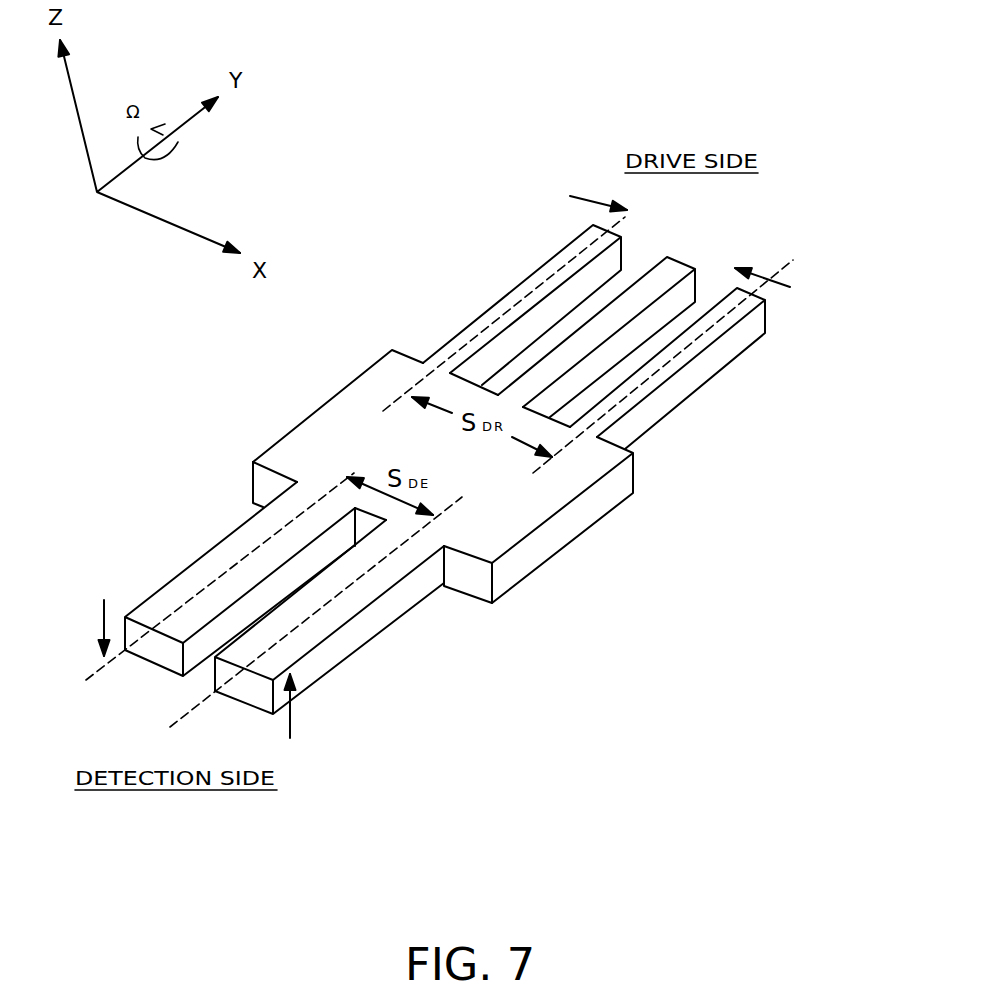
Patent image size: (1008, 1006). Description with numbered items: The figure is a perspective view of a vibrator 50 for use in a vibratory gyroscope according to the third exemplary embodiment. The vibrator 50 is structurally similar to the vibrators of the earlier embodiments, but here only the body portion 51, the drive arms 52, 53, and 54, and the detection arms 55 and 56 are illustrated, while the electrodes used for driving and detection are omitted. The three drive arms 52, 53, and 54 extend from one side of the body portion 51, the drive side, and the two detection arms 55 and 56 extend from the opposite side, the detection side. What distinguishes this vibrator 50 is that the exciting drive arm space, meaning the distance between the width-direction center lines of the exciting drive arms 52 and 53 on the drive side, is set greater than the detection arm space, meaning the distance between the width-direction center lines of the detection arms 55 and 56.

The vibrator 50 is at (686, 68).
The body portion 51 is at (603, 503).
The drive arm 52 is at (513, 290).
The drive arm 53 is at (740, 350).
The drive arm 54 is at (685, 262).
The detection arm 55 is at (212, 550).
The detection arm 56 is at (343, 663).